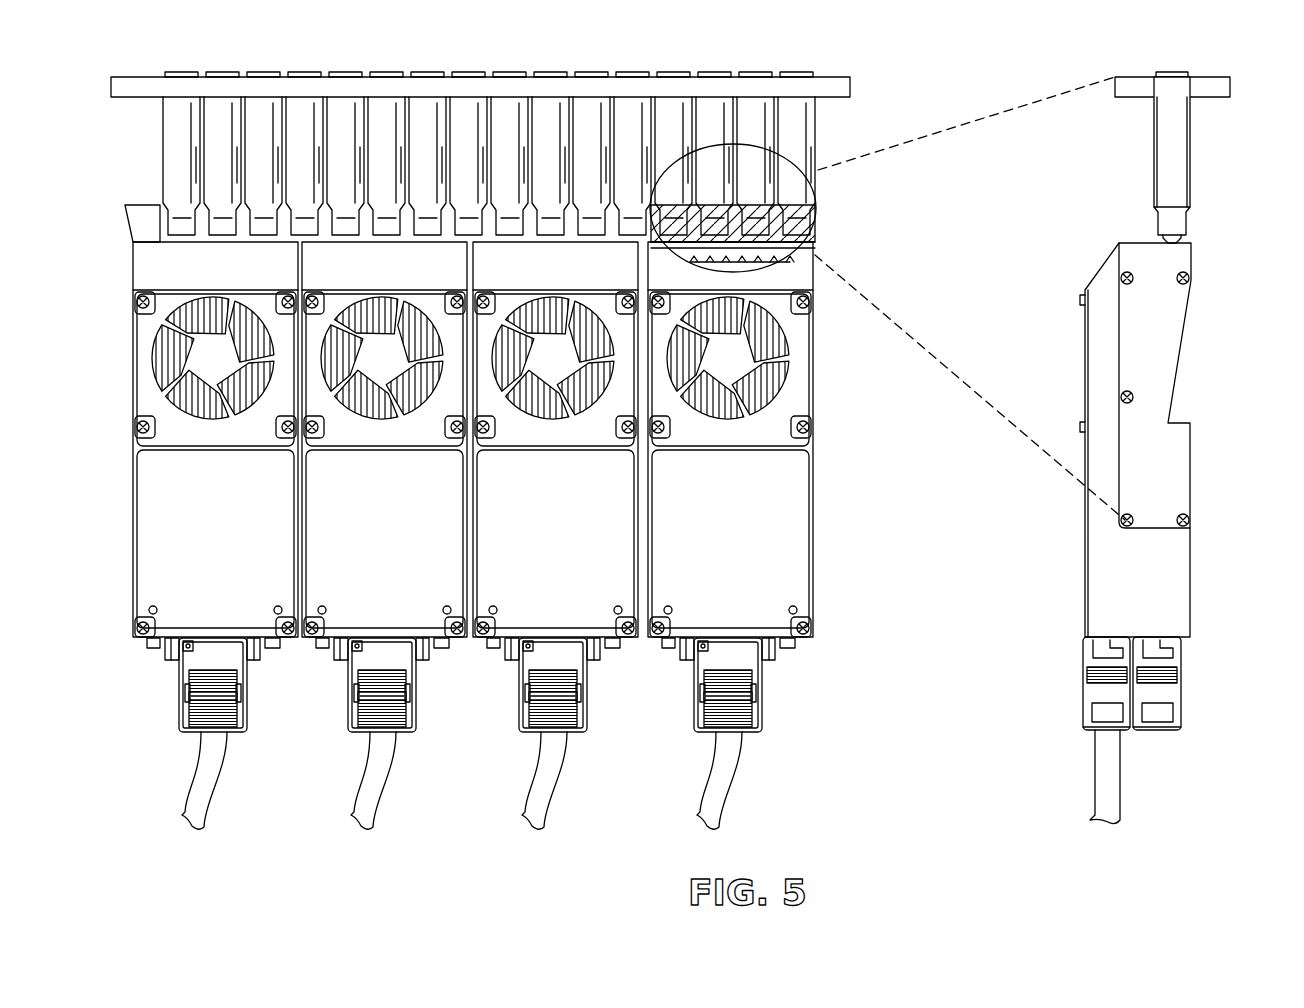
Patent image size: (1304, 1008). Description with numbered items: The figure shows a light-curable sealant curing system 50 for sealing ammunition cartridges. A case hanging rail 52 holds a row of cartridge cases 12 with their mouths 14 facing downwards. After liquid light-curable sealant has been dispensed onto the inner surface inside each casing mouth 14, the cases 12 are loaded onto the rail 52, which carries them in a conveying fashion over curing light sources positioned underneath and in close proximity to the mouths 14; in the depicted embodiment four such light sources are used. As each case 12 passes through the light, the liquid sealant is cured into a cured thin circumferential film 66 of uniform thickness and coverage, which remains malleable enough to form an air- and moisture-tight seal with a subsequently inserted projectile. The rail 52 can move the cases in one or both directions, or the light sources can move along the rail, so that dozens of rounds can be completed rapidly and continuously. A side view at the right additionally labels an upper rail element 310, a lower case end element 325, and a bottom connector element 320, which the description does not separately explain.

The light-curable sealant curing system 50 is at (508, 125).
The case hanging rail 52 is at (850, 80).
The cartridge case 12 is at (800, 113).
The mouth 14 is at (262, 237).
The cured thin circumferential film 66 is at (812, 240).
The mounting bar 310 is at (1228, 86).
The probe tip 325 is at (1188, 242).
The cable connector 320 is at (1175, 718).